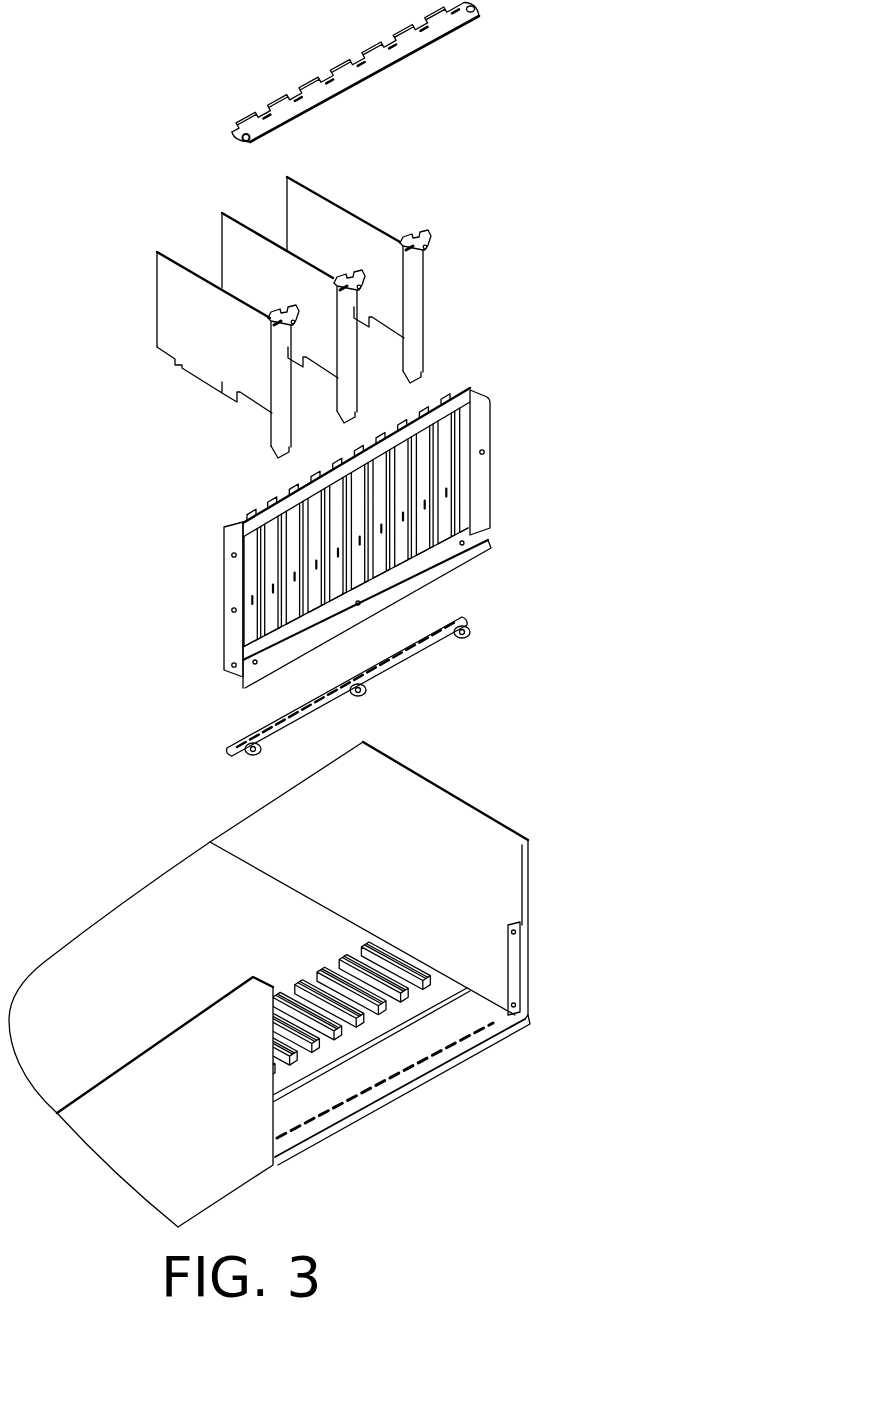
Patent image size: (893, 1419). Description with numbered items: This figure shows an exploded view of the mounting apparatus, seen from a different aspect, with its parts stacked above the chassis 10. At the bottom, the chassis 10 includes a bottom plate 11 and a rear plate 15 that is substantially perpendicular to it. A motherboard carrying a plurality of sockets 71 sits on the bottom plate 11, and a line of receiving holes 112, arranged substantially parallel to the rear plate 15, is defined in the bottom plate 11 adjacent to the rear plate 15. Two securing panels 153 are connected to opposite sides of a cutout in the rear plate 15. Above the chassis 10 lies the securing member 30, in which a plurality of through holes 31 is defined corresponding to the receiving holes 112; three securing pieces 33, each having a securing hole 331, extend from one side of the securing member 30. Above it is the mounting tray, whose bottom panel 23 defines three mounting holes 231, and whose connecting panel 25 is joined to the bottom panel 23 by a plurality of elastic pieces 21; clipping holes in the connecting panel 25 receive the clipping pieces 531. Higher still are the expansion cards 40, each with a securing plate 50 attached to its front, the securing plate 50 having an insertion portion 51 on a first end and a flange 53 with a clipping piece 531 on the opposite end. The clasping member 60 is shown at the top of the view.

The chassis 10 is at (321, 986).
The bottom plate 11 is at (468, 1020).
The receiving holes 112 is at (443, 1052).
The rear plate 15 is at (213, 1183).
The securing panels 153 is at (515, 965).
The elastic pieces 21 is at (447, 518).
The bottom panel 23 is at (409, 608).
The mounting holes 231 is at (463, 547).
The connecting panel 25 is at (448, 407).
The securing member 30 is at (355, 680).
The through holes 31 is at (415, 655).
The securing pieces 33 is at (470, 625).
The securing hole 331 is at (462, 634).
The expansion cards 40 is at (330, 212).
The securing plate 50 is at (400, 333).
The insertion portion 51 is at (413, 380).
The flange 53 is at (420, 237).
The clipping piece 531 is at (425, 248).
The clasping member 60 is at (268, 94).
The sockets 71 is at (345, 1032).